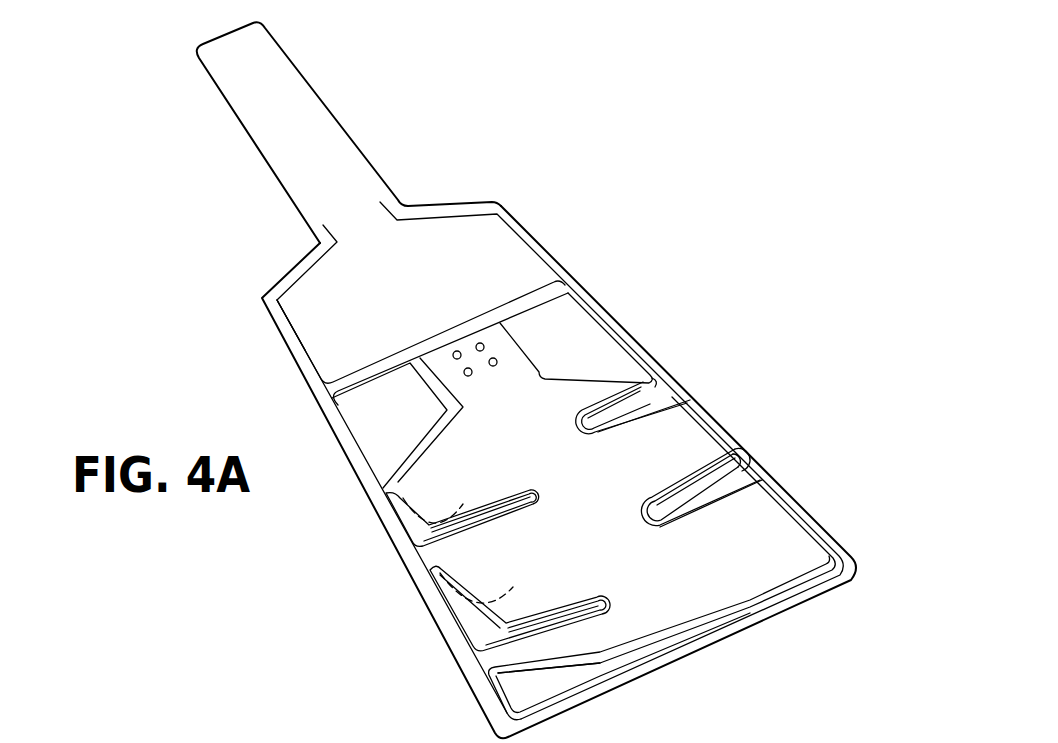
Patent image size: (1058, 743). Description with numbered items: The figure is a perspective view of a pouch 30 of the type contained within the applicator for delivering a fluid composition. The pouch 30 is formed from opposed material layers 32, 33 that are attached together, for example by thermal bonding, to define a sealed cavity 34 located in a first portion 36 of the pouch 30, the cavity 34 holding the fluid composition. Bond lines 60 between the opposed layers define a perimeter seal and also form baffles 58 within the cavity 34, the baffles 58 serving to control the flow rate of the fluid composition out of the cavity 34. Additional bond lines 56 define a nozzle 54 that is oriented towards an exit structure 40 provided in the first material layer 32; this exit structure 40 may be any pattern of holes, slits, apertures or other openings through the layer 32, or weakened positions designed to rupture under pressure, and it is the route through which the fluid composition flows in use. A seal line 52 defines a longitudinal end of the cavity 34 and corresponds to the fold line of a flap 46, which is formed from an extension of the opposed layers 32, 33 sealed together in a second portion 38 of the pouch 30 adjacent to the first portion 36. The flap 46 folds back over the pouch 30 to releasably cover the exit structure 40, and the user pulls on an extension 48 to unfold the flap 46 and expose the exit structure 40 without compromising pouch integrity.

The pouch 30 is at (726, 391).
The material layer 32 is at (588, 337).
The material layer 33 is at (410, 504).
The cavity 34 is at (463, 588).
The first portion 36 is at (676, 613).
The second portion 38 is at (333, 292).
The exit structure 40 is at (450, 355).
The flap 46 is at (490, 262).
The extension 48 is at (320, 137).
The seal line 52 is at (542, 310).
The nozzle 54 is at (443, 470).
The bond lines 56 is at (607, 372).
The baffles 58 is at (513, 643).
The bond lines 60 is at (703, 493).